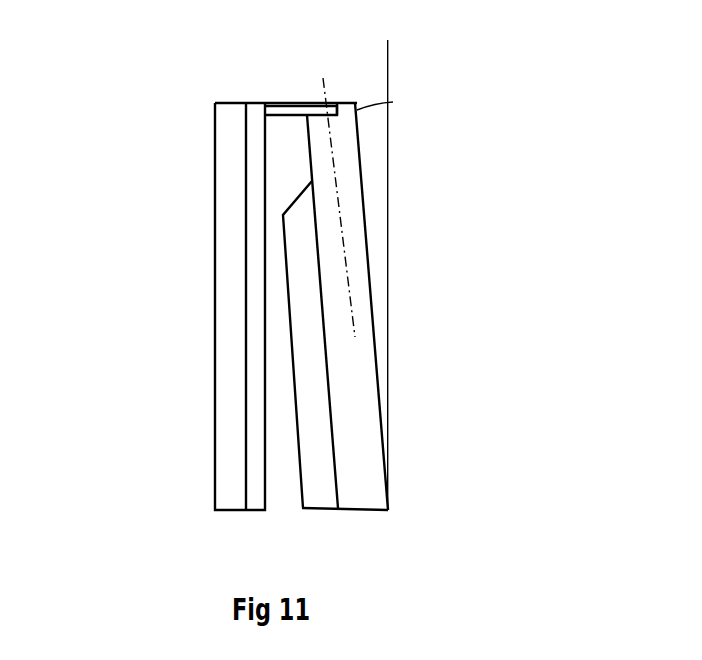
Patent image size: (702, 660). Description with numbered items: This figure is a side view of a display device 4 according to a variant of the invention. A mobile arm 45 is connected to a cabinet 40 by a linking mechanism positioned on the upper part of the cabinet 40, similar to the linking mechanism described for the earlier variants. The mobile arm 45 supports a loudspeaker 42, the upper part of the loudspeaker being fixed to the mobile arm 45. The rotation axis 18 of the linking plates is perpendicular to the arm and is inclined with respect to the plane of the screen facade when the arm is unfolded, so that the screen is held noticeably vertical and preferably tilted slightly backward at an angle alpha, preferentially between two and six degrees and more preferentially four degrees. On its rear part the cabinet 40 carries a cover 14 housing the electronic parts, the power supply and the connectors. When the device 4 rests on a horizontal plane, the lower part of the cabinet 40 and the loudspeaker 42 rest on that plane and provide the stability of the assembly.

The display device 4 is at (186, 135).
The loudspeaker 42 is at (230, 295).
The mobile arm 45 is at (288, 102).
The rotation axis 18 is at (333, 127).
The cover 14 is at (304, 433).
The cabinet 40 is at (355, 307).